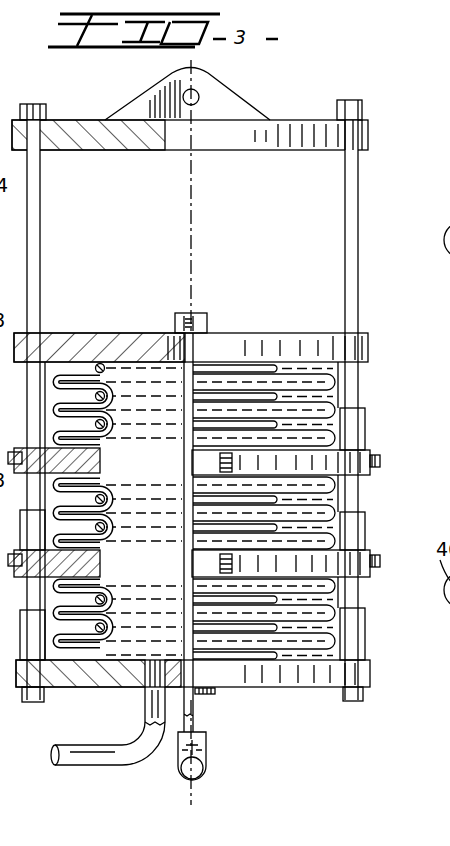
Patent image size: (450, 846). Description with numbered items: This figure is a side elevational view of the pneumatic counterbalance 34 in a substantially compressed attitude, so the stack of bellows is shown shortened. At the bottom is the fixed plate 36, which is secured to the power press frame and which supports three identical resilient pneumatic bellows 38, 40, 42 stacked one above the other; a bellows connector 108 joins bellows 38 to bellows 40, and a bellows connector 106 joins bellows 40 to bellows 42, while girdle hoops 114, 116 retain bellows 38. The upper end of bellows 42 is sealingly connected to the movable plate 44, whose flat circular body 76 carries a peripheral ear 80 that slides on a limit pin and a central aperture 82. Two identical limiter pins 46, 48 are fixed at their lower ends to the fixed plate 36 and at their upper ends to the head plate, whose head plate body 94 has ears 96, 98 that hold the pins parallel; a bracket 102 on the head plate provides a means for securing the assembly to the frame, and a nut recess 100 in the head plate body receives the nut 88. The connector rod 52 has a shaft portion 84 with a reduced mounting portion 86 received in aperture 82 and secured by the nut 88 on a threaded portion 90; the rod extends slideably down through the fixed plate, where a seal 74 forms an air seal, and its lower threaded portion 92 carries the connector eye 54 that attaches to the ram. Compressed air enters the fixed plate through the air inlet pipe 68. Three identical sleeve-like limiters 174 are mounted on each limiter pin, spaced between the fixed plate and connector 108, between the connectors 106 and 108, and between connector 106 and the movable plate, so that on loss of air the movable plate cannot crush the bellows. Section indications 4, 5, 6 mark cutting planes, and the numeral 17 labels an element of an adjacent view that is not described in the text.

The section line 4- 4 is at (12, 623).
The section line 5- 5 is at (12, 672).
The section line 6- 6 is at (400, 548).
The adjacent figure element 17 is at (443, 220).
The counterbalance 34 is at (193, 94).
The fixed plate 36 is at (277, 678).
The resilient pneumatic bellows 38 is at (332, 591).
The resilient pneumatic bellows 40 is at (345, 488).
The resilient pneumatic bellows 42 is at (340, 384).
The movable plate 44 is at (215, 321).
The limiter pin 46 is at (34, 222).
The limiter pin 48 is at (358, 238).
The connector rod 52 is at (208, 706).
The connector eye 54 is at (221, 759).
The air inlet pipe 68 is at (118, 757).
The seal 74 is at (182, 693).
The flat circular body 76 is at (278, 345).
The ear 80 is at (358, 350).
The aperture 82 is at (185, 358).
The shaft portion 84 is at (120, 340).
The reduced mounting portion 86 is at (187, 428).
The nut 88 is at (209, 304).
The threaded portion 90 is at (186, 322).
The threaded portion 92 is at (212, 746).
The head plate body 94 is at (291, 135).
The ear 96 is at (14, 133).
The ear 98 is at (369, 134).
The nut recess 100 is at (187, 97).
The bracket 102 is at (160, 88).
The bellows connector 106 is at (350, 463).
The bellows connector 108 is at (350, 563).
The girdle hoop 114 is at (82, 636).
The girdle hoop 116 is at (93, 595).
The limiter 174 is at (362, 438).